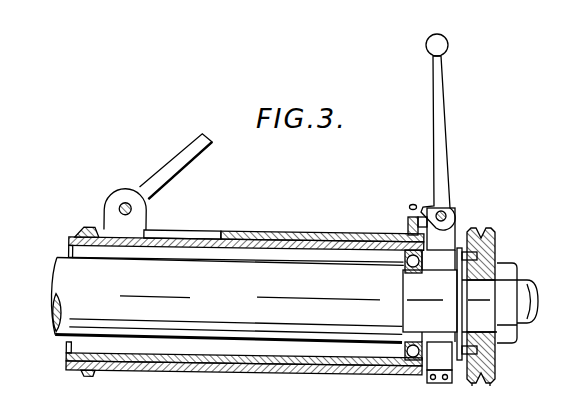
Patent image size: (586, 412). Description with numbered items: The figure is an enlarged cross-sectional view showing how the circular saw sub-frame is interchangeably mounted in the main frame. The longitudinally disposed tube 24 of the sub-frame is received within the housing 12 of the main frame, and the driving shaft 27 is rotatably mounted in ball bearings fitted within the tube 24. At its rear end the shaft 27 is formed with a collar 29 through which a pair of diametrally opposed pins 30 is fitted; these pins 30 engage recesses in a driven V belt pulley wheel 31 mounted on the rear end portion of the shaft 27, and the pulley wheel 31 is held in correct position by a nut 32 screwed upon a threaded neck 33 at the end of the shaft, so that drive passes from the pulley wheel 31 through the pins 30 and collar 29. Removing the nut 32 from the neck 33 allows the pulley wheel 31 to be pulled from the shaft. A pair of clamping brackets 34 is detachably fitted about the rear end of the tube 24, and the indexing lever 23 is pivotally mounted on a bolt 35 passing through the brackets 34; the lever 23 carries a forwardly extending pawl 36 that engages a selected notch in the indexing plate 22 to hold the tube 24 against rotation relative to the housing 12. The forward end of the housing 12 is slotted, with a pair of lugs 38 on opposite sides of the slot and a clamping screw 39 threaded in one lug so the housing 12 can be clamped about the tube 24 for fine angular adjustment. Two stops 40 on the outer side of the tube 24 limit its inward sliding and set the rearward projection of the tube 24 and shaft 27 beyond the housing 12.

The housing 12 is at (292, 234).
The plate 22 is at (413, 205).
The indexing lever 23 is at (441, 162).
The longitudinal tube 24 is at (79, 243).
The driving shaft 27 is at (118, 304).
The collar 29 is at (489, 379).
The pins 30 is at (479, 356).
The V belt pulley wheel 31 is at (494, 233).
The nut 32 is at (508, 269).
The neck 33 is at (522, 284).
The clamping brackets 34 is at (446, 232).
The bolt 35 is at (446, 211).
The pawl 36 is at (412, 212).
The lugs 38 is at (128, 202).
The clamping screw 39 is at (170, 173).
The stops 40 is at (95, 377).